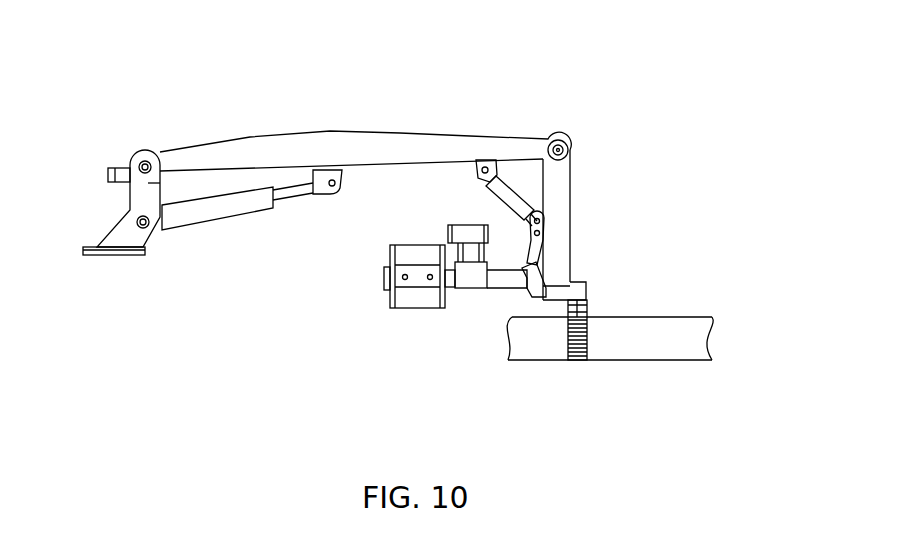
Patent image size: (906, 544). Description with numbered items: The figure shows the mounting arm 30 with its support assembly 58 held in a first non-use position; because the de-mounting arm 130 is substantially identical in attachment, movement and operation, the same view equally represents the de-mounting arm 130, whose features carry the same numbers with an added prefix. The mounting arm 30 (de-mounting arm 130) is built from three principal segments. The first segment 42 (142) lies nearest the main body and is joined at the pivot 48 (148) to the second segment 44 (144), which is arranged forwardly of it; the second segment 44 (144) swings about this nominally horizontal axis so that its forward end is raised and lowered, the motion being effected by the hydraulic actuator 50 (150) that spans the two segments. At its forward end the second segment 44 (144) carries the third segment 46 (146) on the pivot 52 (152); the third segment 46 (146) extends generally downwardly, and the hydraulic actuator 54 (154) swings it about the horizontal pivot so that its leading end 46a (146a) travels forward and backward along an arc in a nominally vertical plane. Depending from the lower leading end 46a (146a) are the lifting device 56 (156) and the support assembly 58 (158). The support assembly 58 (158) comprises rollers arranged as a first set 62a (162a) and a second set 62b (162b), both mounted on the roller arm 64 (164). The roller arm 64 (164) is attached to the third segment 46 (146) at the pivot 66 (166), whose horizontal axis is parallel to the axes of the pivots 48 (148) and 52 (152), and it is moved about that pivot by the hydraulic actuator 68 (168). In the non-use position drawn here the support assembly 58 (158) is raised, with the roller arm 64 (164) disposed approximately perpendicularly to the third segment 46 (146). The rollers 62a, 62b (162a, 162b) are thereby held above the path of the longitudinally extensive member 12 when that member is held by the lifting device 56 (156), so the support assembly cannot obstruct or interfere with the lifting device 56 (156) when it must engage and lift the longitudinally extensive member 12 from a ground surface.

The longitudinally extensive member 12 is at (696, 332).
The mounting arm 30 is at (409, 231).
The de-mounting arm 130 is at (409, 231).
The first segment 42 is at (86, 234).
The first segment 142 is at (98, 238).
The second segment 44 is at (365, 126).
The second segment 144 is at (283, 147).
The third segment 46 is at (666, 211).
The third segment 146 is at (666, 211).
The leading end 46a is at (666, 282).
The leading end 146a is at (666, 282).
The pivot 48 is at (96, 174).
The pivot 148 is at (143, 152).
The hydraulic actuator 50 is at (250, 234).
The hydraulic actuator 150 is at (220, 208).
The pivot 52 is at (611, 121).
The pivot 152 is at (563, 138).
The hydraulic actuator 54 is at (446, 193).
The hydraulic actuator 154 is at (505, 205).
The lifting device 56 is at (604, 374).
The lifting device 156 is at (577, 362).
The support assembly 58 is at (356, 310).
The support assembly 158 is at (356, 310).
The first set of rollers 62a is at (315, 297).
The first set of rollers 162a is at (315, 294).
The second set of rollers 62b is at (373, 251).
The second set of rollers 162b is at (468, 232).
The roller arm 64 is at (482, 326).
The roller arm 164 is at (507, 282).
The pivot 66 is at (624, 255).
The pivot 166 is at (533, 282).
The hydraulic actuator 68 is at (626, 217).
The hydraulic actuator 168 is at (540, 243).